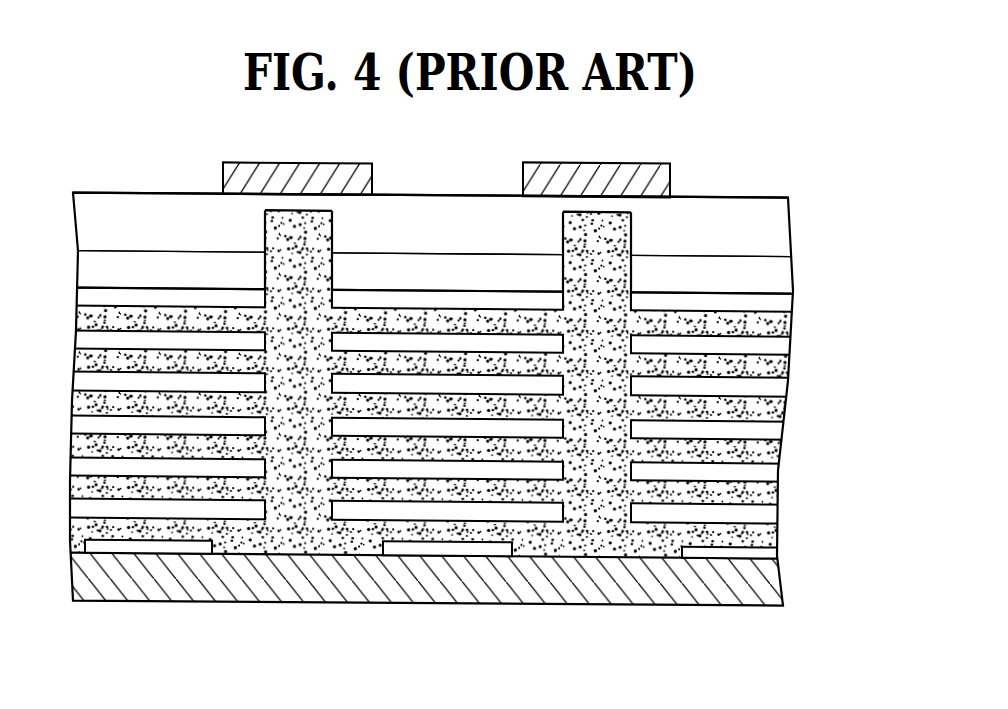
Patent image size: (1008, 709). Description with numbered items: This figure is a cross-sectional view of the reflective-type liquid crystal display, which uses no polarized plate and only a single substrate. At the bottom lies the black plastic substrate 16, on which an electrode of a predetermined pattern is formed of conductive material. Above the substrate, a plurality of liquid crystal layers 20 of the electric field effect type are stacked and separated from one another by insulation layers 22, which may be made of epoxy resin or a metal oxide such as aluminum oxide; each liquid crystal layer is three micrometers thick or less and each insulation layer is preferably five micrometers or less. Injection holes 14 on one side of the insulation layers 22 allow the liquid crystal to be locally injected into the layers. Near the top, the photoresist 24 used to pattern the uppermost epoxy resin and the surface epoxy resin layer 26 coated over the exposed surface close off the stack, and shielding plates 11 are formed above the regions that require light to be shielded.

The shielding plate 11 is at (295, 163).
The injection hole 14 is at (290, 502).
The black plastic substrate 16 is at (728, 603).
The liquid crystal layer 20 is at (766, 308).
The insulation layer 22 is at (772, 412).
The photoresist 24 is at (765, 278).
The surface epoxy resin layer 26 is at (777, 221).